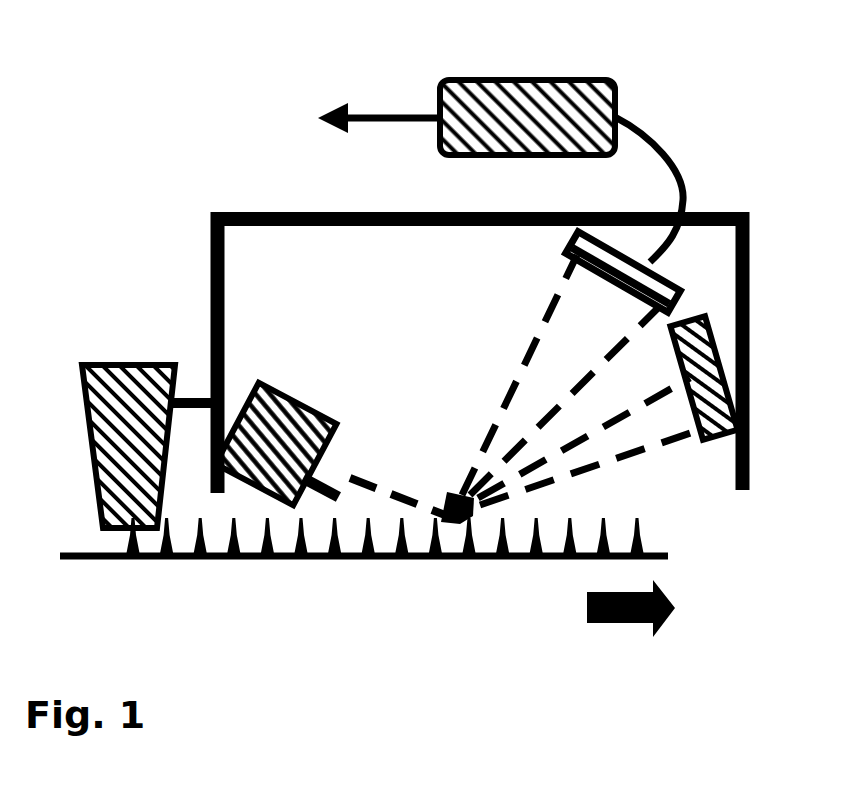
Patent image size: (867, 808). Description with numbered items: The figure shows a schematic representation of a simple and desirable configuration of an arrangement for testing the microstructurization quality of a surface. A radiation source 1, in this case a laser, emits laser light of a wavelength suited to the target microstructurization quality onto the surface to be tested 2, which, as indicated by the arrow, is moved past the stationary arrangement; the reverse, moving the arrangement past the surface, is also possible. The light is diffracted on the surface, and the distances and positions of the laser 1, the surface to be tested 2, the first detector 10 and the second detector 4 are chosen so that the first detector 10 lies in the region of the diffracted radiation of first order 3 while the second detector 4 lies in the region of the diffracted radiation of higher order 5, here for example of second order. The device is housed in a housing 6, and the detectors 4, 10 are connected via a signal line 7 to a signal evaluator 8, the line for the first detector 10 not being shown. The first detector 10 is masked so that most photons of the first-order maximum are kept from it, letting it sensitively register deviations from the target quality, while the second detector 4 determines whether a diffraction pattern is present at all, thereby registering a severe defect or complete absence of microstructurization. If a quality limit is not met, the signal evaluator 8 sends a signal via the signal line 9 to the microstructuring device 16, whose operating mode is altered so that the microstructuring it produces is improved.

The radiation source 1 is at (318, 403).
The surface to be tested 2 is at (537, 537).
The diffracted radiation of first order 3 is at (643, 468).
The second detector 4 is at (677, 286).
The diffracted radiation of higher order 5 is at (522, 324).
The housing 6 is at (227, 292).
The signal line 7 is at (657, 138).
The signal evaluator 8 is at (522, 73).
The signal line 9 is at (307, 118).
The first detector 10 is at (723, 368).
The microstructuring device 16 is at (117, 358).